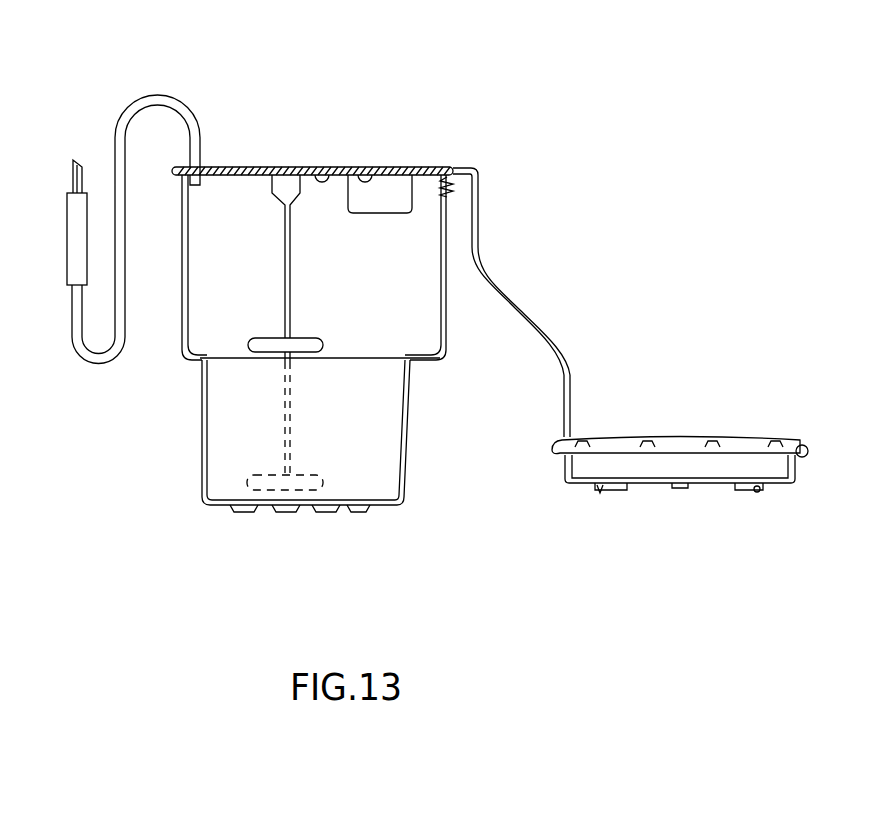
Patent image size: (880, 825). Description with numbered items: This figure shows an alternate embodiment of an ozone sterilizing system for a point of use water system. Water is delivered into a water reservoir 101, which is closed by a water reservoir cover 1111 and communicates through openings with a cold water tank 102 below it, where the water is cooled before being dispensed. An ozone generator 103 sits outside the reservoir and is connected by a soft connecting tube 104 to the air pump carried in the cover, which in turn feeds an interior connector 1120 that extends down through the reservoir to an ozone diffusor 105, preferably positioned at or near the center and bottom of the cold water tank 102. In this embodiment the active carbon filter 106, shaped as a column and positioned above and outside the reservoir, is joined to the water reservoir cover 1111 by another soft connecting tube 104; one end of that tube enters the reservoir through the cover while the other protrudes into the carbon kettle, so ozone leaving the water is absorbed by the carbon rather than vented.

The water reservoir 101 is at (183, 312).
The cold water tank 102 is at (202, 452).
The ozone generator 103 is at (680, 443).
The soft connecting tube 104 is at (137, 103).
The ozone diffusor 105 is at (267, 348).
The active carbon filter 106 is at (77, 238).
The water reservoir cover 1111 is at (382, 167).
The interior connector 1120 is at (285, 277).